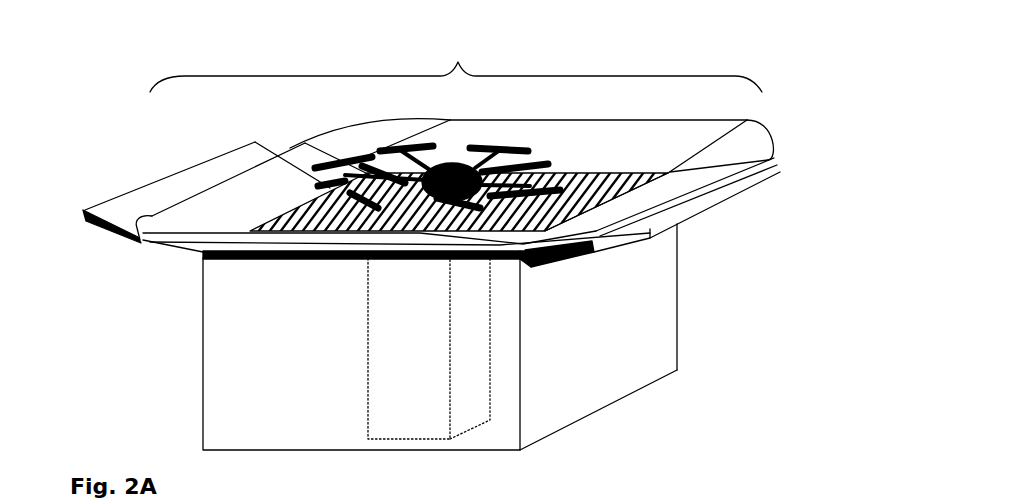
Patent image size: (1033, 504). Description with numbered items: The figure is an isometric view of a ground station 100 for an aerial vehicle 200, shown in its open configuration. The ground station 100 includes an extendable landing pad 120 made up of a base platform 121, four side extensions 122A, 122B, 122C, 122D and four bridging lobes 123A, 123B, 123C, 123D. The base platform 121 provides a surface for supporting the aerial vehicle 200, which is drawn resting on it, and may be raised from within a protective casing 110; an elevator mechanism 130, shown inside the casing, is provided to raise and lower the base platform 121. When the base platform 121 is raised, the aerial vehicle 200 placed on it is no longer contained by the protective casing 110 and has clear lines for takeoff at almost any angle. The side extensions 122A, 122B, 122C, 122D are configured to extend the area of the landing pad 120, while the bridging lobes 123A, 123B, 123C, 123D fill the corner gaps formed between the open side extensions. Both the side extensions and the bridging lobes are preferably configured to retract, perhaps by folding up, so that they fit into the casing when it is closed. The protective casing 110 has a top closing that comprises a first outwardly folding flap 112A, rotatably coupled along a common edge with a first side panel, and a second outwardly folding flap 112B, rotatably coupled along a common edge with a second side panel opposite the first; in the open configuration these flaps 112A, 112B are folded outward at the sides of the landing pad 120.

The ground station 100 is at (596, 29).
The protective casing 110 is at (440, 337).
The first outwardly folding flap 112A is at (176, 192).
The second outwardly folding flap 112B is at (697, 208).
The extendable landing pad 120 is at (431, 203).
The base platform 121 is at (463, 166).
The side extension 122A is at (638, 132).
The side extension 122B is at (659, 222).
The side extension 122C is at (391, 298).
The side extension 122D is at (251, 177).
The bridging lobe 123A is at (755, 129).
The bridging lobe 123B is at (565, 291).
The bridging lobe 123C is at (128, 266).
The bridging lobe 123D is at (341, 121).
The elevator mechanism 130 is at (372, 348).
The aerial vehicle 200 is at (437, 150).